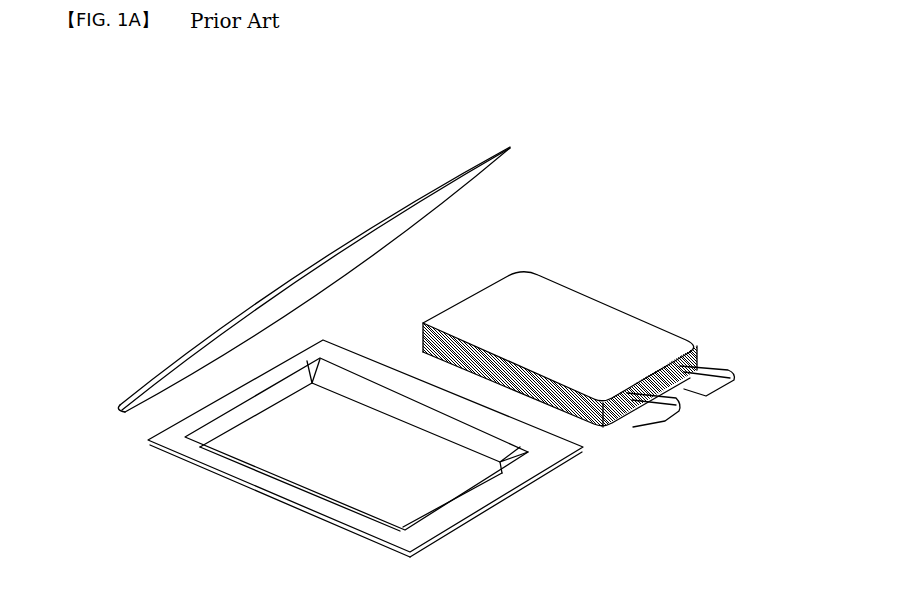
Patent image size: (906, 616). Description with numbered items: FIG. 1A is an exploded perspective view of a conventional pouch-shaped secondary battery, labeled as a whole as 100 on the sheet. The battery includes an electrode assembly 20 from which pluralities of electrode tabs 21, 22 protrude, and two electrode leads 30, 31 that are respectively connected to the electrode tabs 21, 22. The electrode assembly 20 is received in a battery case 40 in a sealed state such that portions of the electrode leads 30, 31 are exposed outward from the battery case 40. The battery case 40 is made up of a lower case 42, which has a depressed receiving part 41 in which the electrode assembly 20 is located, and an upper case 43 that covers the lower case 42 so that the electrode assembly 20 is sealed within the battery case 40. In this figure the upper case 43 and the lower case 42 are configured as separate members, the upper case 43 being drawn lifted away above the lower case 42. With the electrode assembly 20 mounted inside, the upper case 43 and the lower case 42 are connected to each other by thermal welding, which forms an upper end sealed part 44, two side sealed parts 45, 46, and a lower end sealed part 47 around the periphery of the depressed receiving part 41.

The battery pack 100 is at (112, 132).
The electrode assembly 20 is at (622, 292).
The electrode tab 21 is at (680, 358).
The electrode tab 22 is at (622, 392).
The electrode lead 30 is at (732, 378).
The electrode lead 31 is at (675, 414).
The battery case 40 is at (118, 522).
The depressed receiving part 41 is at (367, 458).
The lower case 42 is at (173, 456).
The upper case 43 is at (121, 412).
The upper end sealed part 44 is at (478, 492).
The side sealed part 45 is at (410, 393).
The side sealed part 46 is at (287, 492).
The lower end sealed part 47 is at (218, 408).